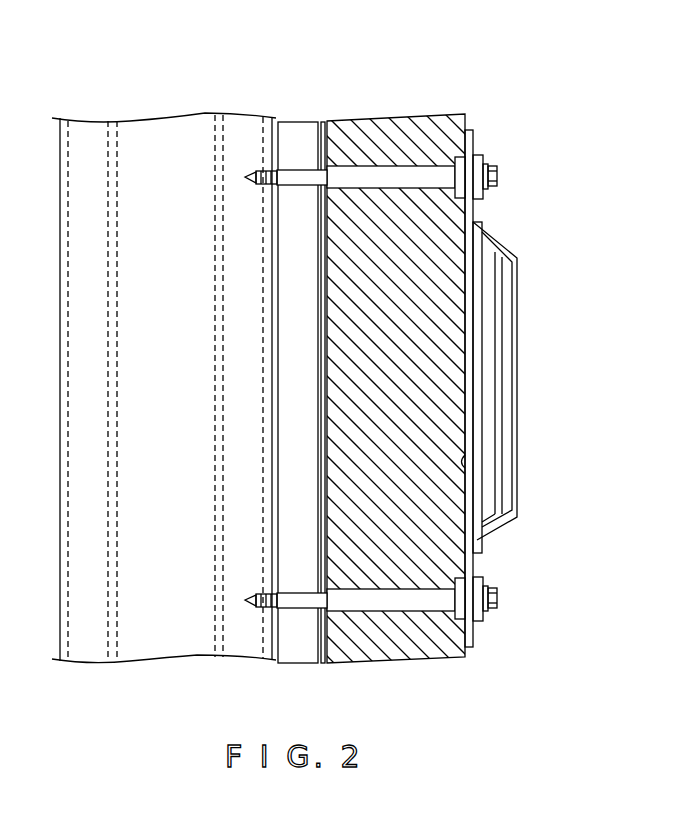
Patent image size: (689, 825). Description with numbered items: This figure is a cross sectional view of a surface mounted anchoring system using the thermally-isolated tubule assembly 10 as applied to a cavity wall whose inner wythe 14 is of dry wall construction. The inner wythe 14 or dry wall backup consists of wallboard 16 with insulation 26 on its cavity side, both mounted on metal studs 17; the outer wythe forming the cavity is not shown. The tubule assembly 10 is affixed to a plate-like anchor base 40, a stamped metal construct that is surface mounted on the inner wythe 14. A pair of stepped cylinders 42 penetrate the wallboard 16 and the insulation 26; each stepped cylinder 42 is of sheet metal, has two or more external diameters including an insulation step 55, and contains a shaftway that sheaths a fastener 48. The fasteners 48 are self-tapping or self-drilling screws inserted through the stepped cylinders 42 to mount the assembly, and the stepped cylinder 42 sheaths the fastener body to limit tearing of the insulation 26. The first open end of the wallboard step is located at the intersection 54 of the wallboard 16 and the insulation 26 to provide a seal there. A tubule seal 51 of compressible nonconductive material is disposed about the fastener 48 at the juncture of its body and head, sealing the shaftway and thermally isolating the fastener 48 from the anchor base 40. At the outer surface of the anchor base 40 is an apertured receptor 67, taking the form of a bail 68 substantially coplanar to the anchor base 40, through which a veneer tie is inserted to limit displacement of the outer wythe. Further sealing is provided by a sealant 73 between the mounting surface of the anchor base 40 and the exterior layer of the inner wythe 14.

The tubule assembly 10 is at (502, 634).
The inner wythe 14 is at (266, 690).
The wallboard 16 is at (300, 128).
The metal studs 17 is at (168, 135).
The insulation 26 is at (425, 124).
The anchor base 40 is at (466, 462).
The stepped cylinder 42 is at (387, 170).
The fastener 48 is at (250, 172).
The tubule seal 51 is at (477, 153).
The intersection 54 is at (323, 122).
The insulation step 55 is at (418, 607).
The apertured receptor 67 is at (478, 222).
The bail 68 is at (518, 386).
The sealant 73 is at (447, 157).